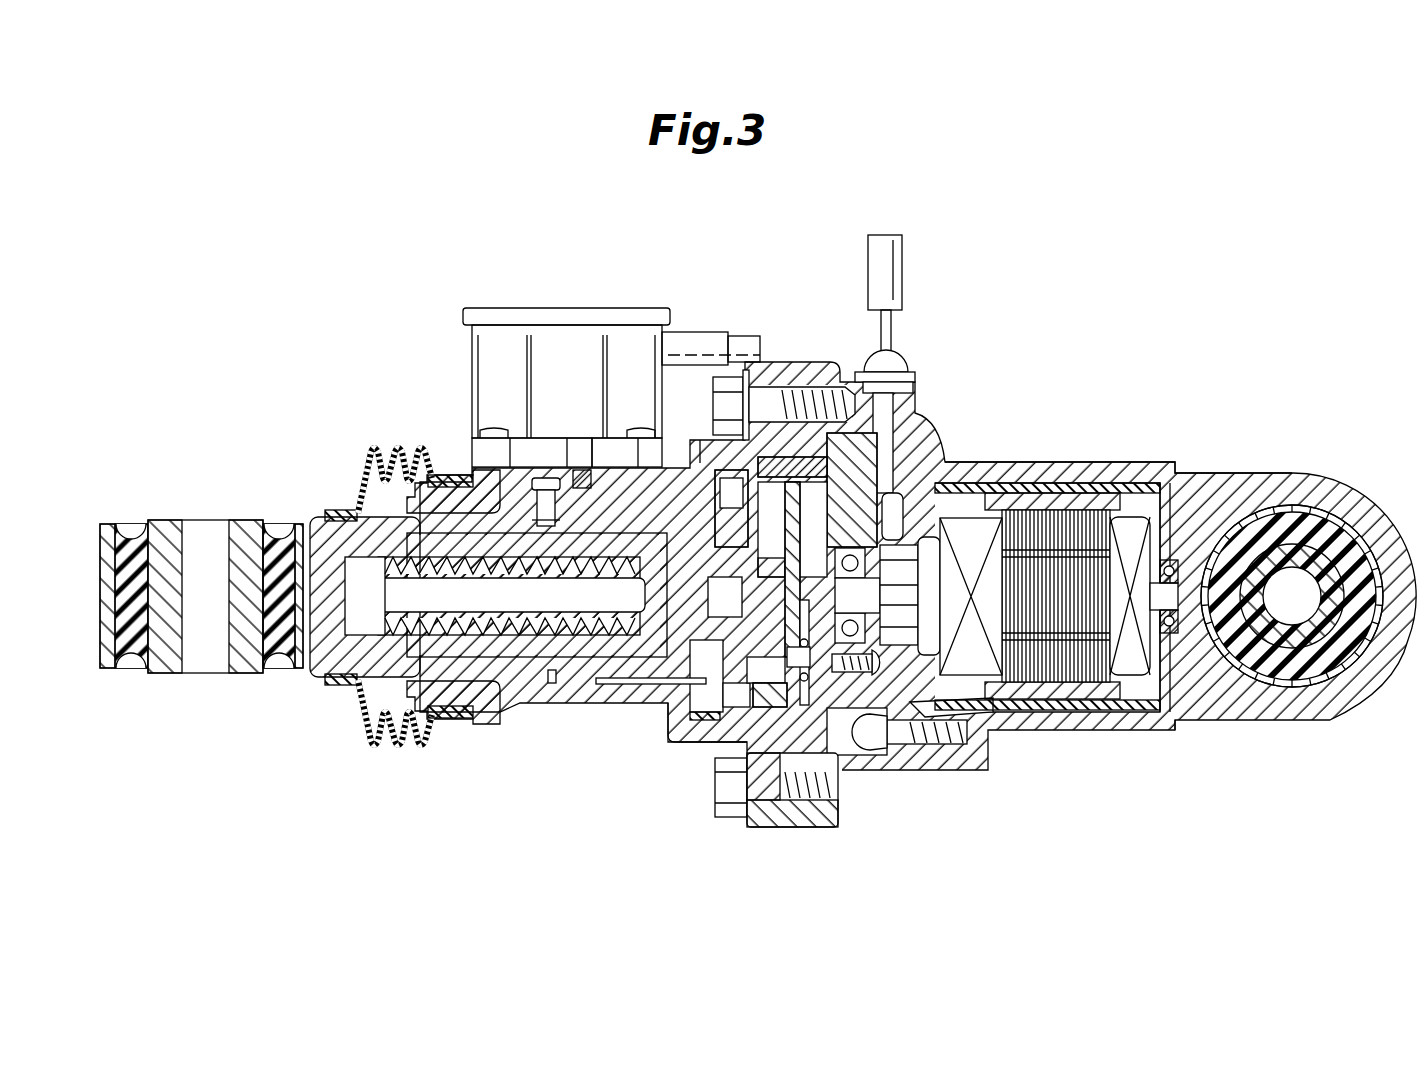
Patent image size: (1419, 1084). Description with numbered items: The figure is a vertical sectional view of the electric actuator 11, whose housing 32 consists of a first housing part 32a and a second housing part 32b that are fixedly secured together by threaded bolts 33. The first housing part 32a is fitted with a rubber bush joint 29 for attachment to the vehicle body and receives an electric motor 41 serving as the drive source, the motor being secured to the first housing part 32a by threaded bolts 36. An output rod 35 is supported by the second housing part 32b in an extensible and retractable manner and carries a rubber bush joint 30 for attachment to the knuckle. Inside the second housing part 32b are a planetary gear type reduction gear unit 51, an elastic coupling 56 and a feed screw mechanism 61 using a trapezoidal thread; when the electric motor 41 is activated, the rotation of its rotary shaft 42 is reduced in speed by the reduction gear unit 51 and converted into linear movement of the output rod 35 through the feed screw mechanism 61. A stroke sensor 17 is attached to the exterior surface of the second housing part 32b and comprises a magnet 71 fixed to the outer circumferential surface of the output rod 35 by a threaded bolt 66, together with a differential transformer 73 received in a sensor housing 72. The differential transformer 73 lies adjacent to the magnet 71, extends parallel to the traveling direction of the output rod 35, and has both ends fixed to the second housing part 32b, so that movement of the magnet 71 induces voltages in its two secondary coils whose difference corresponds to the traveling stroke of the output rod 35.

The electric actuator 11 is at (1190, 330).
The stroke sensor 17 is at (554, 305).
The rubber bush joint 29 is at (1372, 506).
The rubber bush joint 30 is at (162, 520).
The housing 32 is at (782, 845).
The first housing part 32a is at (1162, 466).
The second housing part 32b is at (490, 705).
The threaded bolts 33 is at (723, 398).
The output rod 35 is at (380, 695).
The threaded bolts 36 is at (960, 772).
The electric motor 41 is at (1104, 480).
The rotary shaft 42 is at (800, 585).
The reduction gear unit 51 is at (833, 742).
The elastic coupling 56 is at (668, 743).
The feed screw mechanism 61 is at (552, 688).
The threaded bolt 66 is at (540, 486).
The magnet 71 is at (605, 462).
The sensor housing 72 is at (470, 350).
The differential transformer 73 is at (548, 440).